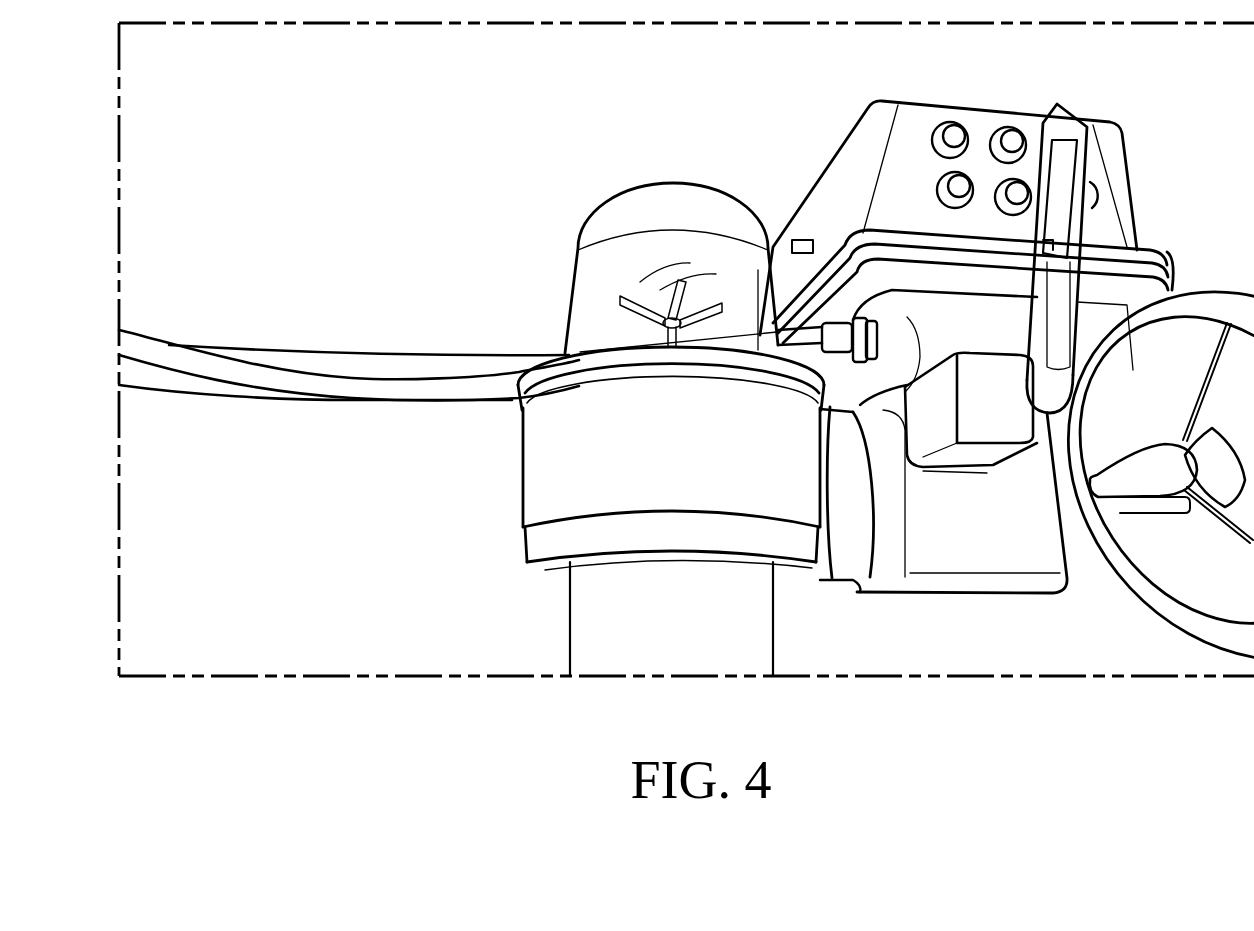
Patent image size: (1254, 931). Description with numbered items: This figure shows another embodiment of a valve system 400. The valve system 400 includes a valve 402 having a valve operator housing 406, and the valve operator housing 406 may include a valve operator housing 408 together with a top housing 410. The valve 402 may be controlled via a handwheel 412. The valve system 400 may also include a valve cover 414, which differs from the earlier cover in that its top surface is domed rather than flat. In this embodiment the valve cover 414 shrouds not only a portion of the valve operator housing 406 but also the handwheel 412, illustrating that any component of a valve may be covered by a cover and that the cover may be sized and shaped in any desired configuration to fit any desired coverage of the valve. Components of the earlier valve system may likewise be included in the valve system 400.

The valve system 400 is at (1172, 99).
The valve 402 is at (842, 617).
The valve operator housing 406 is at (489, 486).
The valve operator housing 408 is at (694, 481).
The top housing 410 is at (757, 370).
The handwheel 412 is at (678, 332).
The valve cover 414 is at (586, 320).